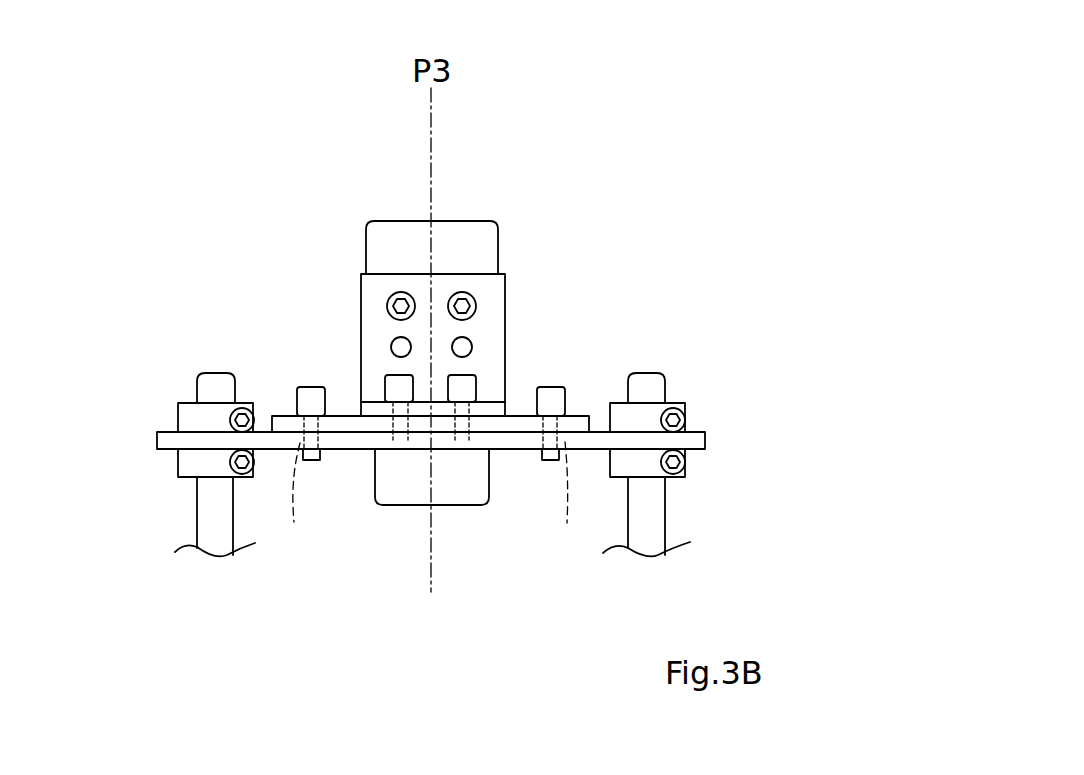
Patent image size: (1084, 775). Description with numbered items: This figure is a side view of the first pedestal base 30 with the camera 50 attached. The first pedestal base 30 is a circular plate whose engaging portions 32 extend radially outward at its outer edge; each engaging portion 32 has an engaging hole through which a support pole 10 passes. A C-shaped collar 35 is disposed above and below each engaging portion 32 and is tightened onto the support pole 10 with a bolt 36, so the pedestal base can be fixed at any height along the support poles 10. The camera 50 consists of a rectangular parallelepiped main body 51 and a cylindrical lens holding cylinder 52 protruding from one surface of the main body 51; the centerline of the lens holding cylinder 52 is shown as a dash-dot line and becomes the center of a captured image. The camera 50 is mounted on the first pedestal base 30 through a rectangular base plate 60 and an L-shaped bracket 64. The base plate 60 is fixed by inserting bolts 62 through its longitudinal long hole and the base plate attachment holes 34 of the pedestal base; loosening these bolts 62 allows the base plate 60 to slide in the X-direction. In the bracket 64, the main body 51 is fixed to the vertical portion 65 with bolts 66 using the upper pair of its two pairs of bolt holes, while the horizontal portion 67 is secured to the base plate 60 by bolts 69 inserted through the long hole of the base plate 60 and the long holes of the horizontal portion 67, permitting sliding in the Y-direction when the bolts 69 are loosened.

The support pole 10 is at (215, 515).
The first pedestal base 30 is at (343, 450).
The engaging portion 32 is at (167, 442).
The base plate attachment hole 34 is at (430, 501).
The C-shaped collar 35 is at (203, 423).
The bolt 36 is at (242, 408).
The camera 50 is at (456, 369).
The main body 51 is at (470, 242).
The lens holding cylinder 52 is at (458, 490).
The base plate 60 is at (283, 416).
The bolt 62 is at (313, 397).
The L-shaped bracket 64 is at (411, 363).
The vertical portion 65 is at (418, 288).
The horizontal portion 67 is at (373, 408).
The bolt 66 is at (399, 302).
The bolt 69 is at (397, 385).